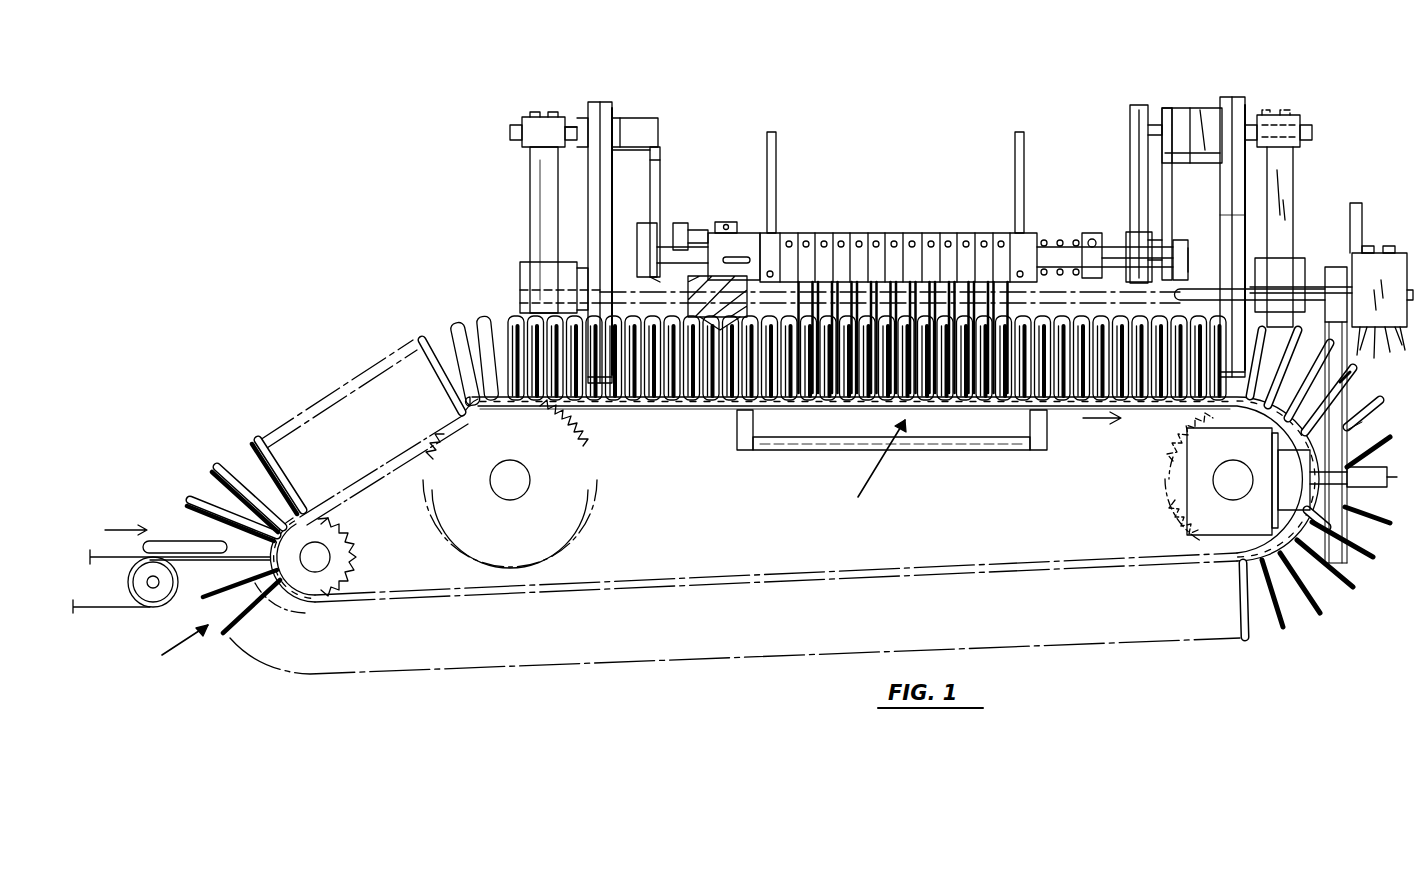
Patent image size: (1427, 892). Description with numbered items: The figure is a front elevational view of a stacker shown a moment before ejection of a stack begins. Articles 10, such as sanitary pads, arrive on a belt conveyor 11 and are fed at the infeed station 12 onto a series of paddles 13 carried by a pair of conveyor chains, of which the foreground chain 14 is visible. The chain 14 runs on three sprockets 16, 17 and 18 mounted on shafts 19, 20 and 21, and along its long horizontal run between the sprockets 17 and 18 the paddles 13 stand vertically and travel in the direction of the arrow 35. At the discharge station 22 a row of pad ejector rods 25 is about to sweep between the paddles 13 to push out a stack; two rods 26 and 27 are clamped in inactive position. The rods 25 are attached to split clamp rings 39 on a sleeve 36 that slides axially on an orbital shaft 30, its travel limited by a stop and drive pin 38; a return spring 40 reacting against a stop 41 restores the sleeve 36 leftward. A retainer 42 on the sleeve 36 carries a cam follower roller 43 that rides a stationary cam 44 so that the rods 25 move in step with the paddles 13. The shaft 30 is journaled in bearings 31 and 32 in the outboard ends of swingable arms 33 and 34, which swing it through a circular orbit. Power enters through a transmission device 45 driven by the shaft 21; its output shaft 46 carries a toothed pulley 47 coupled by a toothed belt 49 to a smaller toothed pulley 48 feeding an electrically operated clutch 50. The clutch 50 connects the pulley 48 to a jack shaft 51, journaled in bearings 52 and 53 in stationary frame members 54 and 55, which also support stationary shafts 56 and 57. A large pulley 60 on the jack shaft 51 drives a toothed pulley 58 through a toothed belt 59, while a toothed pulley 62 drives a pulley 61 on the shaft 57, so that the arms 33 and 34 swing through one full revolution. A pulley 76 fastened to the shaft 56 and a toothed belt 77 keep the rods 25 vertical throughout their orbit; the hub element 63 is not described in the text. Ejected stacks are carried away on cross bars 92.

The articles 10 is at (482, 318).
The belt conveyor 11 is at (115, 612).
The infeed station 12 is at (169, 651).
The paddles 13 is at (1240, 603).
The conveyor chain 14 is at (580, 404).
The sprocket 16 is at (356, 534).
The sprocket 17 is at (410, 468).
The sprocket 18 is at (1152, 500).
The shaft 19 is at (326, 555).
The shaft 20 is at (515, 485).
The shaft 21 is at (1228, 482).
The discharge station 22 is at (892, 457).
The pad ejector rods 25 is at (840, 402).
The rod 26 is at (776, 136).
The rod 27 is at (1016, 136).
The shaft 30 is at (1112, 245).
The bearing 31 is at (645, 240).
The bearing 32 is at (1180, 245).
The swingable arm 33 is at (655, 118).
The swingable arm 34 is at (1166, 108).
The arrow 35 is at (1085, 422).
The sleeve 36 is at (702, 240).
The stop and drive pin 38 is at (752, 255).
The split clamp ring 39 is at (927, 236).
The return spring 40 is at (1043, 240).
The stop 41 is at (1086, 240).
The retainer 42 is at (718, 222).
The cam follower roller 43 is at (738, 412).
The stationary cam 44 is at (666, 404).
The transmission device 45 is at (1210, 520).
The power output shaft 46 is at (1372, 490).
The toothed pulley 47 is at (1352, 431).
The toothed pulley 48 is at (1336, 267).
The toothed belt 49 is at (1345, 390).
The electrically operated clutch 50 is at (1385, 348).
The jack shaft 51 is at (1410, 292).
The bearing 52 is at (1300, 270).
The bearing 53 is at (522, 278).
The frame member 54 is at (1290, 155).
The frame member 55 is at (538, 205).
The stationary shaft 56 is at (1302, 122).
The stationary shaft 57 is at (520, 127).
The toothed pulley 58 is at (1246, 102).
The toothed belt 59 is at (1233, 97).
The large pulley 60 is at (1222, 220).
The pulley 61 is at (614, 103).
The toothed pulley 62 is at (590, 220).
The bar 63 is at (600, 102).
The pulley 76 is at (1131, 108).
The toothed belt 77 is at (1140, 108).
The cross bars 92 is at (970, 450).